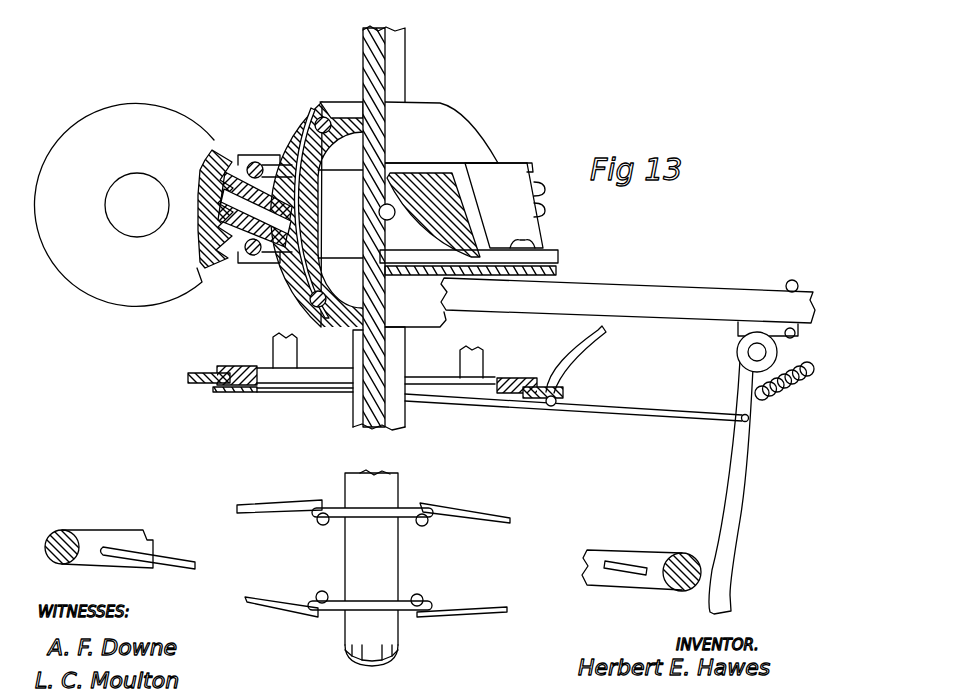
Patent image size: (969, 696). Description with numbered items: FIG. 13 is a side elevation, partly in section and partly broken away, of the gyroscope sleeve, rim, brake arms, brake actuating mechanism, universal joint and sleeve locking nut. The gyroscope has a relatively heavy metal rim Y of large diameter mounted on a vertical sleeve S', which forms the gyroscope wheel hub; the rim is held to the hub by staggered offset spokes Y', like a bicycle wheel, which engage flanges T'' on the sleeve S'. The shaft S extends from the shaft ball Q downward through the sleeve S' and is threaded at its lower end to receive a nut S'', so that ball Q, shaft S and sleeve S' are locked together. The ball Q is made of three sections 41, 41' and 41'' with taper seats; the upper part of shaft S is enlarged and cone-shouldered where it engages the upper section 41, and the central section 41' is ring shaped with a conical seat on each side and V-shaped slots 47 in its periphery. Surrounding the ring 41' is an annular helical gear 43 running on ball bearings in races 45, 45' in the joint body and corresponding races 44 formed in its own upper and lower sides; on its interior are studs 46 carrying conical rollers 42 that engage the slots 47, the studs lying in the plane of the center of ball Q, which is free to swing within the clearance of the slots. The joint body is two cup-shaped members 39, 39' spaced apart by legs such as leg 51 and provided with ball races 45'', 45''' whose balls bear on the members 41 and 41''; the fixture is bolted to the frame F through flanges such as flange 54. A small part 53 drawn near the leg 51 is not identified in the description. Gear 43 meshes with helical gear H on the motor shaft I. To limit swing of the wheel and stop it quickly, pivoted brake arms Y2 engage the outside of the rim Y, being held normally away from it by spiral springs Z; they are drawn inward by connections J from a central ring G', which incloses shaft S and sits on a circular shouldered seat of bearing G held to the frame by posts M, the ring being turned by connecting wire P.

The helical gear H is at (124, 204).
The motor shaft I is at (137, 205).
The driving roller 42 is at (303, 250).
The body member 39 is at (484, 260).
The body member 39' is at (430, 132).
The upper section of ball 41 is at (350, 156).
The central ring section of ball 41' is at (340, 209).
The lower section of ball 41'' is at (343, 273).
The shaft ball Q is at (364, 220).
The stud 46 is at (293, 222).
The V-shaped slot 47 is at (292, 180).
The ball race 45 is at (465, 255).
The ball race 45' is at (264, 150).
The ball race 45'' is at (290, 310).
The ball race 45''' is at (316, 102).
The race 44 is at (465, 255).
The annular helical gear 43 is at (240, 165).
The gyroscope shaft S is at (342, 236).
The sleeve S' is at (361, 506).
The nut S'' is at (362, 676).
The flange T'' is at (370, 575).
The spoke Y' is at (373, 549).
The leg 51 is at (505, 205).
The nut 53 is at (530, 246).
The flange 54 is at (342, 227).
The frame F is at (628, 300).
The brake arm Y2 is at (745, 452).
The spiral spring Z is at (784, 382).
The connection wire J is at (573, 406).
The bearing G is at (341, 359).
The post M is at (378, 355).
The actuating ring G' is at (484, 260).
The connecting wire P is at (578, 359).
The gyroscope rim Y is at (377, 543).